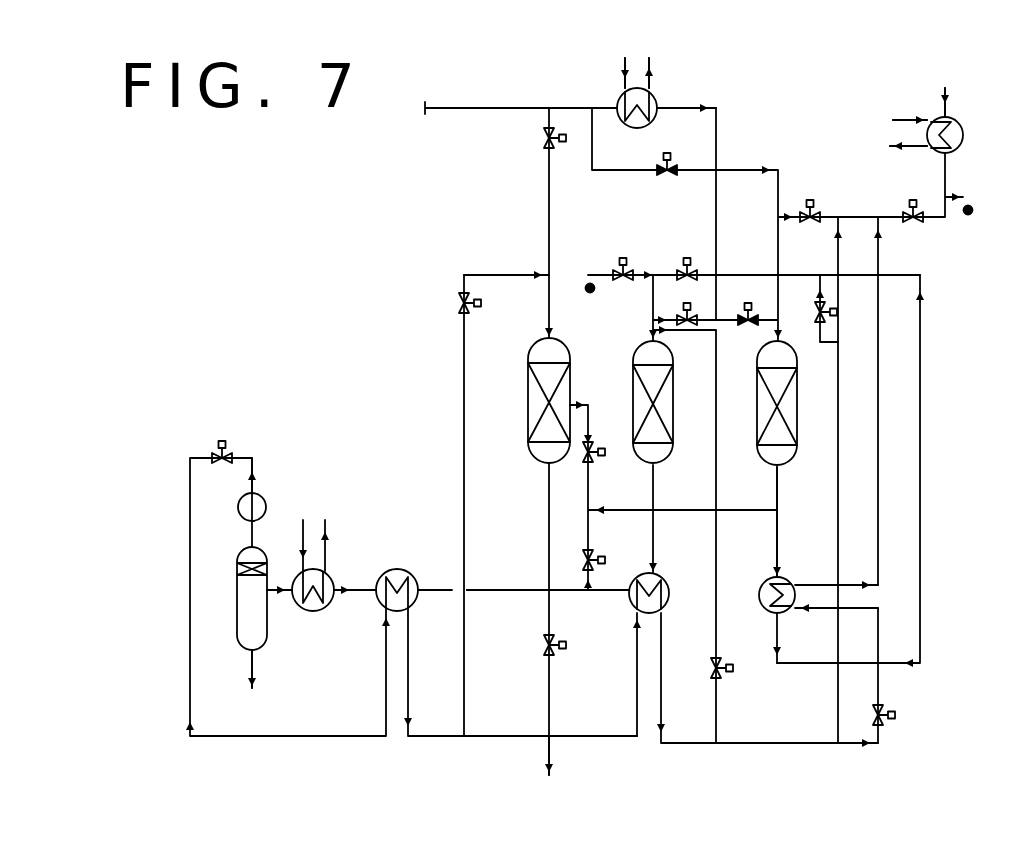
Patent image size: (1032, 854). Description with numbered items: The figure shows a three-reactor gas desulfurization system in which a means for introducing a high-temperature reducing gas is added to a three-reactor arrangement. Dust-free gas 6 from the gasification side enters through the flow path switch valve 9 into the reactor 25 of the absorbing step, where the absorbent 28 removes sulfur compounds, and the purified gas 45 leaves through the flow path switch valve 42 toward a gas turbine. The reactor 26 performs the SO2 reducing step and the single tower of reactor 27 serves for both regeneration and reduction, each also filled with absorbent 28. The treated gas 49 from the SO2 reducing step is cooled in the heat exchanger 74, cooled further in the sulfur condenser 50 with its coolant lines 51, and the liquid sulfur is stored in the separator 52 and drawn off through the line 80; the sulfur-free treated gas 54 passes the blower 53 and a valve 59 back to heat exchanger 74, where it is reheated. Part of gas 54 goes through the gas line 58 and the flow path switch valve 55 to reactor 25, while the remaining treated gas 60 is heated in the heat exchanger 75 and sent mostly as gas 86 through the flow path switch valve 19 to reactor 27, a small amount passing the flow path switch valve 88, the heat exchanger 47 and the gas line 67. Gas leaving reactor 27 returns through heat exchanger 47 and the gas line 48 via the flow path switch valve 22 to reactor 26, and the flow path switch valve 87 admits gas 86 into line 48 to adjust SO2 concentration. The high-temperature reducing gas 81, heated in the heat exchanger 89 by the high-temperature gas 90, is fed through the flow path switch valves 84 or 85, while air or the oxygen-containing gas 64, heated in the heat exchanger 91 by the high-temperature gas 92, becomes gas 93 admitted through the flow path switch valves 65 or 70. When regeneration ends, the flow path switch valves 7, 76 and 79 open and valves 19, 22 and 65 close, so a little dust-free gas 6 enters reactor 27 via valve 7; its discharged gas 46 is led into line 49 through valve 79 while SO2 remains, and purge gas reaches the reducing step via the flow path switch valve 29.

The dust-free gas 6 is at (507, 105).
The flow path switch valve 7 is at (670, 153).
The flow path switch valve 9 is at (566, 141).
The flow path switch valve 19 is at (810, 198).
The flow path switch valve 22 is at (687, 257).
The reactor 25 is at (565, 348).
The reactor 26 is at (663, 355).
The reactor 27 is at (807, 350).
The absorbent 28 is at (565, 387).
The flow path switch valve 29 is at (606, 451).
The flow path switch valve 42 is at (567, 645).
The purified gas 45 is at (551, 750).
The discharged gas 46 is at (779, 493).
The heat exchanger 47 is at (757, 604).
The gas line 48 is at (921, 456).
The treated gas 49 is at (510, 589).
The sulfur condenser 50 is at (313, 606).
The coolant line 51 is at (300, 532).
The separator 52 is at (239, 622).
The blower 53 is at (262, 497).
The treated gas 54 is at (243, 456).
The flow path switch valve 55 is at (483, 303).
The gas line 58 is at (461, 398).
The valve 59 is at (222, 440).
The treated gas 60 is at (498, 735).
The oxygen-containing gas 64 is at (948, 98).
The flow path switch valve 65 is at (910, 203).
The gas line 67 is at (880, 400).
The flow path switch valve 70 is at (623, 257).
The heat exchanger 74 is at (410, 570).
The heat exchanger 75 is at (683, 570).
The flow path switch valve 76 is at (733, 672).
The flow path switch valve 79 is at (606, 559).
The line 80 is at (255, 668).
The high-temperature reducing gas 81 is at (720, 135).
The flow path switch valve 84 is at (684, 308).
The flow path switch valve 85 is at (748, 300).
The gas line 86 is at (839, 492).
The flow path switch valve 87 is at (814, 306).
The flow path switch valve 88 is at (896, 715).
The heat exchanger 89 is at (652, 94).
The high-temperature gas 90 is at (622, 62).
The heat exchanger 91 is at (962, 140).
The high-temperature gas 92 is at (917, 118).
The oxygen-containing gas 93 is at (943, 177).